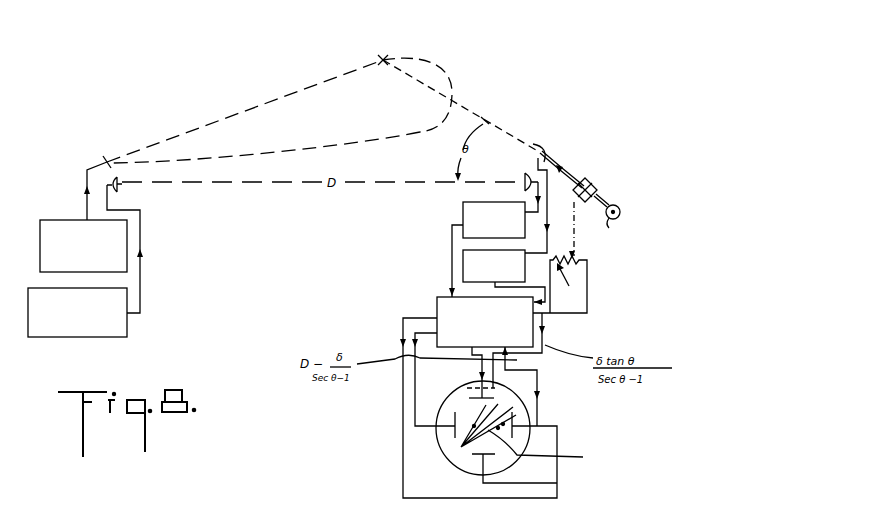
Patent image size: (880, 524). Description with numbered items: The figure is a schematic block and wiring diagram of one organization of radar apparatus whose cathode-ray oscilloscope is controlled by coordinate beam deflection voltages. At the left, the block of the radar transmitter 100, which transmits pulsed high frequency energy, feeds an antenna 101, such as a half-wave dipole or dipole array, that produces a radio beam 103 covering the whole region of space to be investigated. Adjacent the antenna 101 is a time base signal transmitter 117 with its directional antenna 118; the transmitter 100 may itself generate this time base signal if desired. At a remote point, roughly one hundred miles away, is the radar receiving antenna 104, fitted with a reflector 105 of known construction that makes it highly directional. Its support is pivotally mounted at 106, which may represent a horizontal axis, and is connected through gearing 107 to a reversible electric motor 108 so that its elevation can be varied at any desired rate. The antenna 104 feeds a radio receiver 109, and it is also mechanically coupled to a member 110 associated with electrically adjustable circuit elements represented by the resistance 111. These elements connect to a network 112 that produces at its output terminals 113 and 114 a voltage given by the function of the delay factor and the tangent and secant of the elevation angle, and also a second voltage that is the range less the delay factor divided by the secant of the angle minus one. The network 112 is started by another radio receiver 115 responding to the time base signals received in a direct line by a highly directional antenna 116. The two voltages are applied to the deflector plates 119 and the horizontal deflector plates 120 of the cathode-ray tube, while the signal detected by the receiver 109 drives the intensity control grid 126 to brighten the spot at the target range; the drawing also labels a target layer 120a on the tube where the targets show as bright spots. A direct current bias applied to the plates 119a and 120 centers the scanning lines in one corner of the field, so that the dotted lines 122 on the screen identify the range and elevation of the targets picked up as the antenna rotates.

The radar transmitter 100 is at (50, 220).
The antenna 101 is at (106, 156).
The radio beam 103 is at (313, 73).
The radar receiving antenna 104 is at (537, 145).
The reflector 105 is at (547, 153).
The pivotal mounting 106 is at (563, 169).
The gearing 107 is at (597, 190).
The reversible electric motor 108 is at (620, 212).
The radio receiver 109 is at (463, 258).
The member 110 is at (578, 259).
The resistance 111 is at (572, 282).
The network 112 is at (437, 303).
The output terminal 113 is at (467, 347).
The output terminal 114 is at (545, 348).
The radio receiver 115 is at (463, 213).
The antenna 116 is at (522, 178).
The time base signal transmitter 117 is at (70, 337).
The directional antenna 118 is at (124, 187).
The vertical deflector plates 119 is at (469, 398).
The plates 119a is at (472, 457).
The horizontal deflector plates 120 is at (437, 416).
The target layer 120a is at (558, 427).
The dotted lines 122 is at (458, 446).
The intensity control grid 126 is at (466, 387).